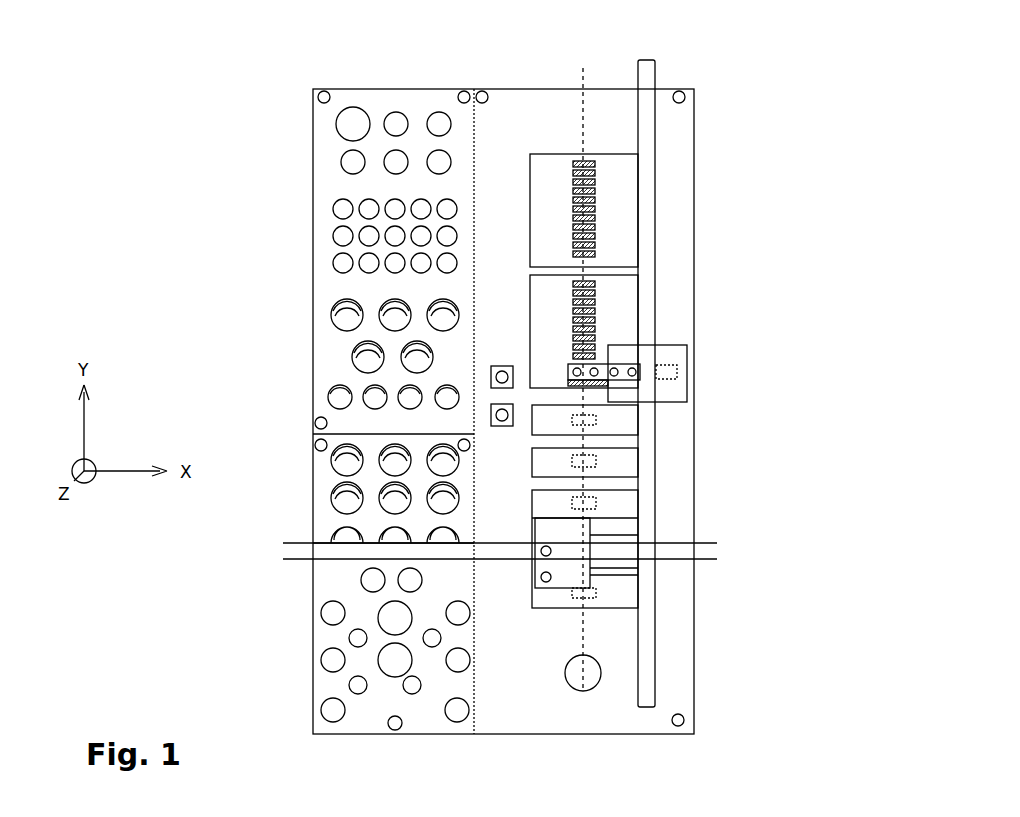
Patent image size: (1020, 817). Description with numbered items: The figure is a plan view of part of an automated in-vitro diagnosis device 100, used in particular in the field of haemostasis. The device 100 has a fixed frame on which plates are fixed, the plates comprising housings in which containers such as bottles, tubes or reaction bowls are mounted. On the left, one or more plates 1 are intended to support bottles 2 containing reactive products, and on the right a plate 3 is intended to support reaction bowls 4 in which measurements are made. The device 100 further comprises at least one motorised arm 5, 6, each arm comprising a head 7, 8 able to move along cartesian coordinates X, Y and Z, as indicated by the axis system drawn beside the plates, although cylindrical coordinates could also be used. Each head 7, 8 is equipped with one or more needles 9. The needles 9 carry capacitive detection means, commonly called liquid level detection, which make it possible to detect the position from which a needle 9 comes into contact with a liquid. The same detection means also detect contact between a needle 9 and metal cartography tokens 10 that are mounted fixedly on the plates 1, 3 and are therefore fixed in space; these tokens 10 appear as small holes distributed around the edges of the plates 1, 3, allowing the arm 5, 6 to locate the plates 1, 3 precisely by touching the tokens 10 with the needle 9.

The automated in-vitro diagnosis device 100 is at (745, 41).
The plate 1 is at (331, 191).
The bottle 2 is at (340, 264).
The plate 3 is at (592, 698).
The reaction bowl 4 is at (643, 436).
The motorised arm 5 is at (650, 325).
The motorised arm 6 is at (683, 545).
The head 7 is at (677, 355).
The head 8 is at (590, 572).
The needle 9 is at (612, 378).
The cartography token 10 is at (326, 90).